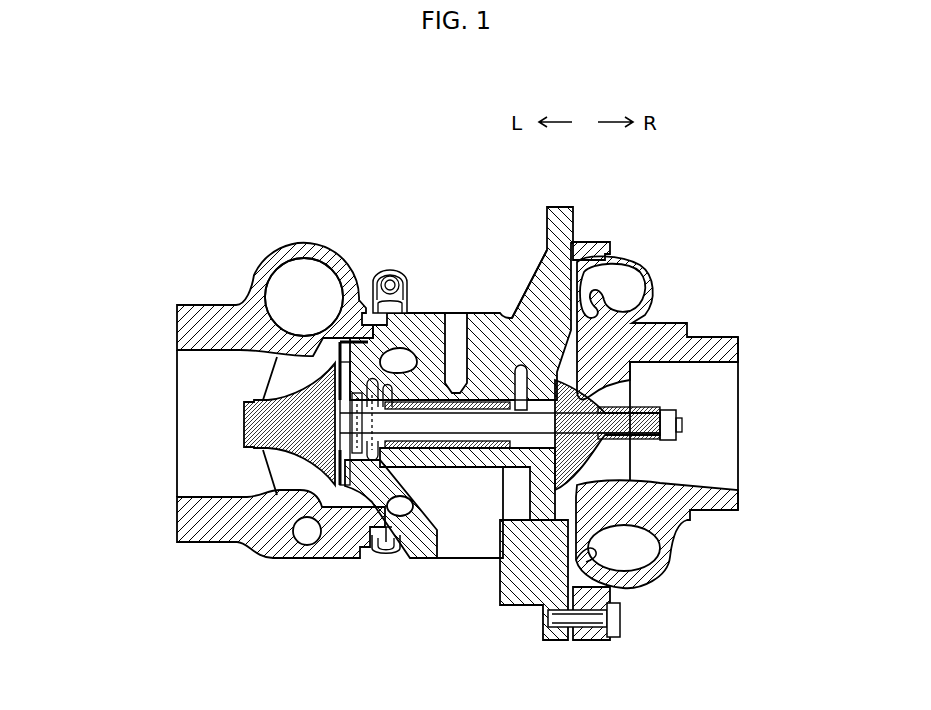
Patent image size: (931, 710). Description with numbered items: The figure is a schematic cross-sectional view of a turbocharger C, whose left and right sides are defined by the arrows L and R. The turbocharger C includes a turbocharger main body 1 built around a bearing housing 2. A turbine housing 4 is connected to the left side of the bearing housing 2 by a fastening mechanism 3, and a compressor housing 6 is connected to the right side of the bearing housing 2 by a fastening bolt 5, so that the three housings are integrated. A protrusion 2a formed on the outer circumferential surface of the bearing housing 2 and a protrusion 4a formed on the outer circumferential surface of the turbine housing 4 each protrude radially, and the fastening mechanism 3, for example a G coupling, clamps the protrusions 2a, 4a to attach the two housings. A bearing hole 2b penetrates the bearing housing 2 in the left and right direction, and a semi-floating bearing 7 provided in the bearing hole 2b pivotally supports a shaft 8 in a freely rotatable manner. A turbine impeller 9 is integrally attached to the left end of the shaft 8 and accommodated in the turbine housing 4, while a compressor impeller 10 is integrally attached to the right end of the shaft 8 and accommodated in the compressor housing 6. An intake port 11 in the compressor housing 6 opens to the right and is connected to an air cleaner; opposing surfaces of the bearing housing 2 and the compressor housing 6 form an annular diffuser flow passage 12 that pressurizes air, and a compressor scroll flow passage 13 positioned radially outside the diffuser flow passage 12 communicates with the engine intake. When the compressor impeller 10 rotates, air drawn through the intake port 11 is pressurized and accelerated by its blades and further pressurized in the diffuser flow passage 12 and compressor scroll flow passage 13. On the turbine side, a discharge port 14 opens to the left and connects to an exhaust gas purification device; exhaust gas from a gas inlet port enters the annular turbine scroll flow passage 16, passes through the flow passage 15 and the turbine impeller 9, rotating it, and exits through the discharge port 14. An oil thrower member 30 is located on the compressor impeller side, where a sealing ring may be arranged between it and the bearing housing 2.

The turbocharger C is at (207, 93).
The turbocharger main body 1 is at (294, 135).
The bearing housing 2 is at (547, 226).
The protrusion 2a is at (396, 572).
The bearing hole 2b is at (440, 478).
The fastening mechanism 3 is at (405, 296).
The turbine housing 4 is at (350, 262).
The protrusion 4a is at (382, 572).
The fastening bolt 5 is at (617, 630).
The compressor housing 6 is at (585, 242).
The semi-floating bearing 7 is at (510, 397).
The shaft 8 is at (437, 408).
The turbine impeller 9 is at (268, 475).
The compressor impeller 10 is at (628, 392).
The intake port 11 is at (738, 492).
The diffuser flow passage 12 is at (510, 317).
The compressor scroll flow passage 13 is at (620, 275).
The discharge port 14 is at (177, 382).
The flow passage 15 is at (322, 328).
The turbine scroll flow passage 16 is at (300, 265).
The oil thrower member 30 is at (520, 385).